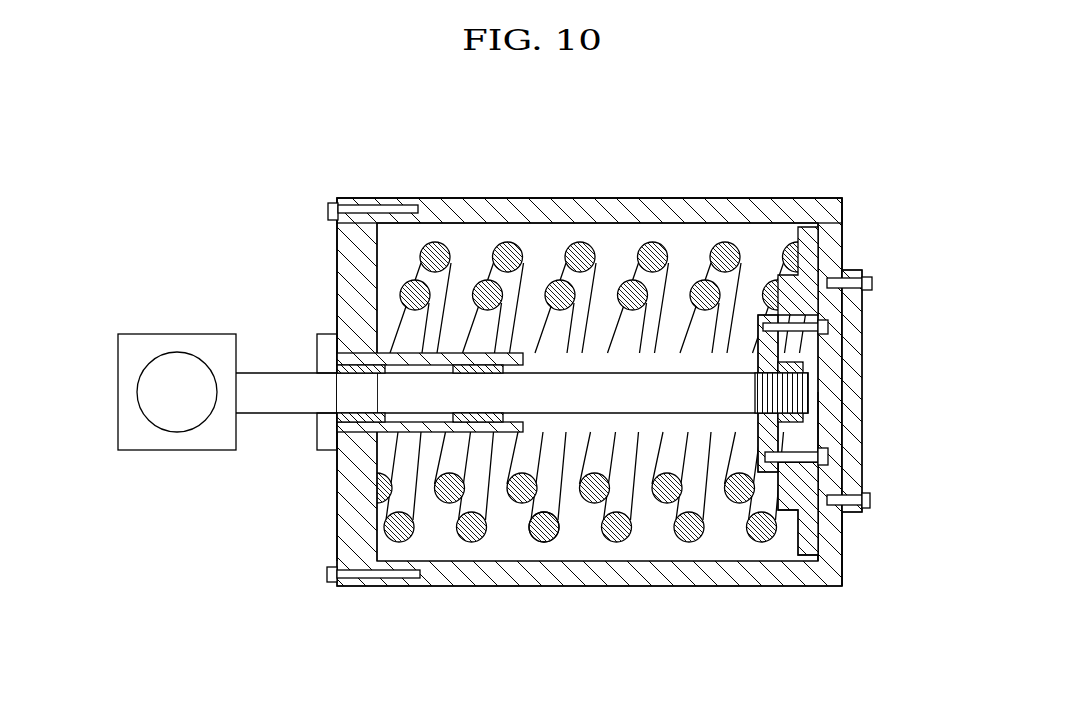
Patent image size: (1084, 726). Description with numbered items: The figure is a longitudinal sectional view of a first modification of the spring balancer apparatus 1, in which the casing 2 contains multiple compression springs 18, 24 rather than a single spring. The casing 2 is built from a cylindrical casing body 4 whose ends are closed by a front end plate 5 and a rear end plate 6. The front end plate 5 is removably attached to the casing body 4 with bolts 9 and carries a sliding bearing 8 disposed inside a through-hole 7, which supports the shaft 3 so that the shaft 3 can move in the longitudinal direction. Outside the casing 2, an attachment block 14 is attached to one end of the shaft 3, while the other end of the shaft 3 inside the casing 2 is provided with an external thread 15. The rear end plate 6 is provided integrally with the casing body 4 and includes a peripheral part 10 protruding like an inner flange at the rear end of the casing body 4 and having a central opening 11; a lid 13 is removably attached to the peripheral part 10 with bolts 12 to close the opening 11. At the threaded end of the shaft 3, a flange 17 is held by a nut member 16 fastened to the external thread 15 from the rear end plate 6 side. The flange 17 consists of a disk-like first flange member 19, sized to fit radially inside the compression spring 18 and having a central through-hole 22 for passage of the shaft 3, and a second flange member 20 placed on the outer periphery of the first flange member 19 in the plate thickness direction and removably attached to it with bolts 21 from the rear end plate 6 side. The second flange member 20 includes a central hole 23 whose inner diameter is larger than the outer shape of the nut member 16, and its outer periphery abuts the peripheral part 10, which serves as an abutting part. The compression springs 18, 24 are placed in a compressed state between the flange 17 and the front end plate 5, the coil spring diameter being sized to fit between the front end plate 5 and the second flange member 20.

The spring balancer apparatus 1 is at (196, 211).
The casing 2 is at (543, 182).
The shaft 3 is at (580, 434).
The cylindrical casing body 4 is at (635, 198).
The front end plate 5 is at (337, 275).
The rear end plate 6 is at (880, 348).
The through-hole 7 is at (363, 378).
The sliding bearing 8 is at (317, 432).
The bolts 9 is at (328, 209).
The peripheral part 10 is at (845, 240).
The central opening 11 is at (842, 478).
The bolts 12 is at (878, 283).
The lid 13 is at (862, 423).
The attachment block 14 is at (118, 388).
The external thread 15 is at (795, 395).
The nut member 16 is at (808, 365).
The flange 17 is at (744, 335).
The compression spring 18 is at (466, 541).
The first flange member 19 is at (757, 440).
The second flange member 20 is at (798, 538).
The bolts 21 is at (828, 326).
The through-hole 22 is at (760, 380).
The central hole 23 is at (805, 430).
The compression spring 24 is at (532, 538).